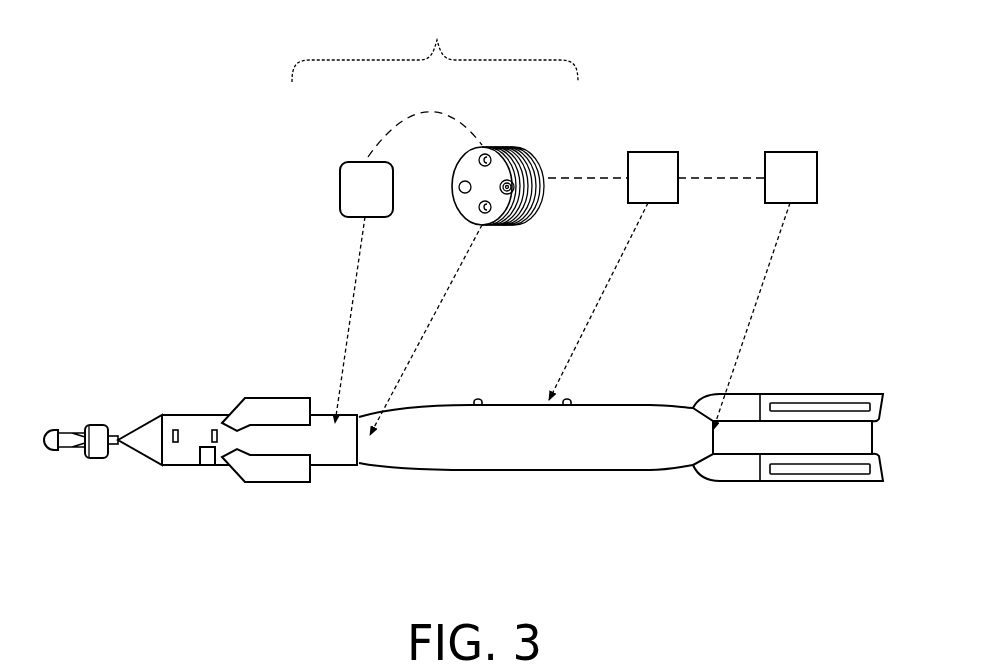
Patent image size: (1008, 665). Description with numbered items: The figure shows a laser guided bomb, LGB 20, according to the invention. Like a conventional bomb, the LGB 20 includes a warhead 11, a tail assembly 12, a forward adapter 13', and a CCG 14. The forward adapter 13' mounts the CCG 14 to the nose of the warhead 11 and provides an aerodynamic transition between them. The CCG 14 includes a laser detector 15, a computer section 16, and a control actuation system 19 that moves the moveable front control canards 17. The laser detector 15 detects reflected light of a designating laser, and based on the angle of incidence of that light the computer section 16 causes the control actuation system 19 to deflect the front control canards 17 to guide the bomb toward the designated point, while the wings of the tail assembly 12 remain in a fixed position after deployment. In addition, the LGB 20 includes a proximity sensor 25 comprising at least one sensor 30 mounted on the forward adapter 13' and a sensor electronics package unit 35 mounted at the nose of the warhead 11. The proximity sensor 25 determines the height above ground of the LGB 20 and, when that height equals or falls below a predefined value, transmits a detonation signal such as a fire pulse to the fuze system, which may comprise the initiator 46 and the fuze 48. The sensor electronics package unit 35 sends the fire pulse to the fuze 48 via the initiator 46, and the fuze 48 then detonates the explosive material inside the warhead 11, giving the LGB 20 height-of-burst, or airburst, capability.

The warhead 11 is at (597, 471).
The tail assembly 12 is at (773, 509).
The forward adapter 13' is at (276, 489).
The CCG 14 is at (161, 360).
The laser detector 15 is at (63, 494).
The computer section 16 is at (190, 465).
The front control canards 17 is at (277, 398).
The control actuation system 19 is at (208, 426).
The LGB 20 is at (130, 146).
The proximity sensor 25 is at (435, 47).
The sensor 30 is at (350, 162).
The sensor electronics package unit 35 is at (500, 147).
The initiator 46 is at (653, 152).
The fuze 48 is at (790, 152).